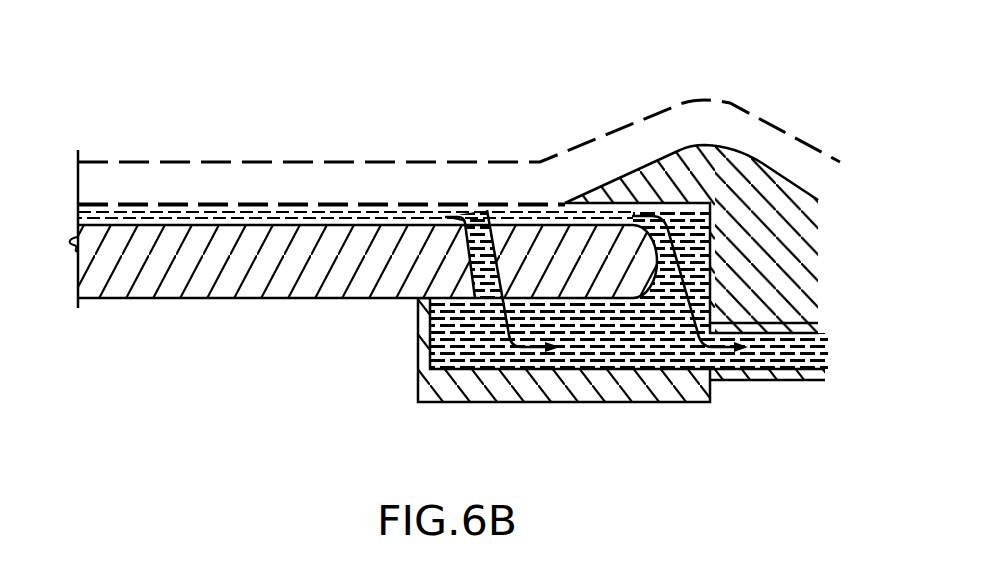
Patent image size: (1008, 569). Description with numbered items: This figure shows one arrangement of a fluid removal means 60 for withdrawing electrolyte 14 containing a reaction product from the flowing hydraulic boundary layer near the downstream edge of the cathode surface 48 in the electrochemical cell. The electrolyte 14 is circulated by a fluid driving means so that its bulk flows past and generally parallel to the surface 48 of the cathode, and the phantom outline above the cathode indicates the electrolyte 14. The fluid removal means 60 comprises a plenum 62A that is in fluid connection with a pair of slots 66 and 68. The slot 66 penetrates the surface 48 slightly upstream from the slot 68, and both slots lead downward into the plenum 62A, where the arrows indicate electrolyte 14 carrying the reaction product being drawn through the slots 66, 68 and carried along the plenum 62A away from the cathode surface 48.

The electrolyte 14 is at (228, 50).
The surface of cathode 48 is at (197, 224).
The fluid removal means 60 is at (655, 70).
The plenum 62A is at (617, 352).
The slot 66 is at (488, 216).
The slot 68 is at (563, 222).